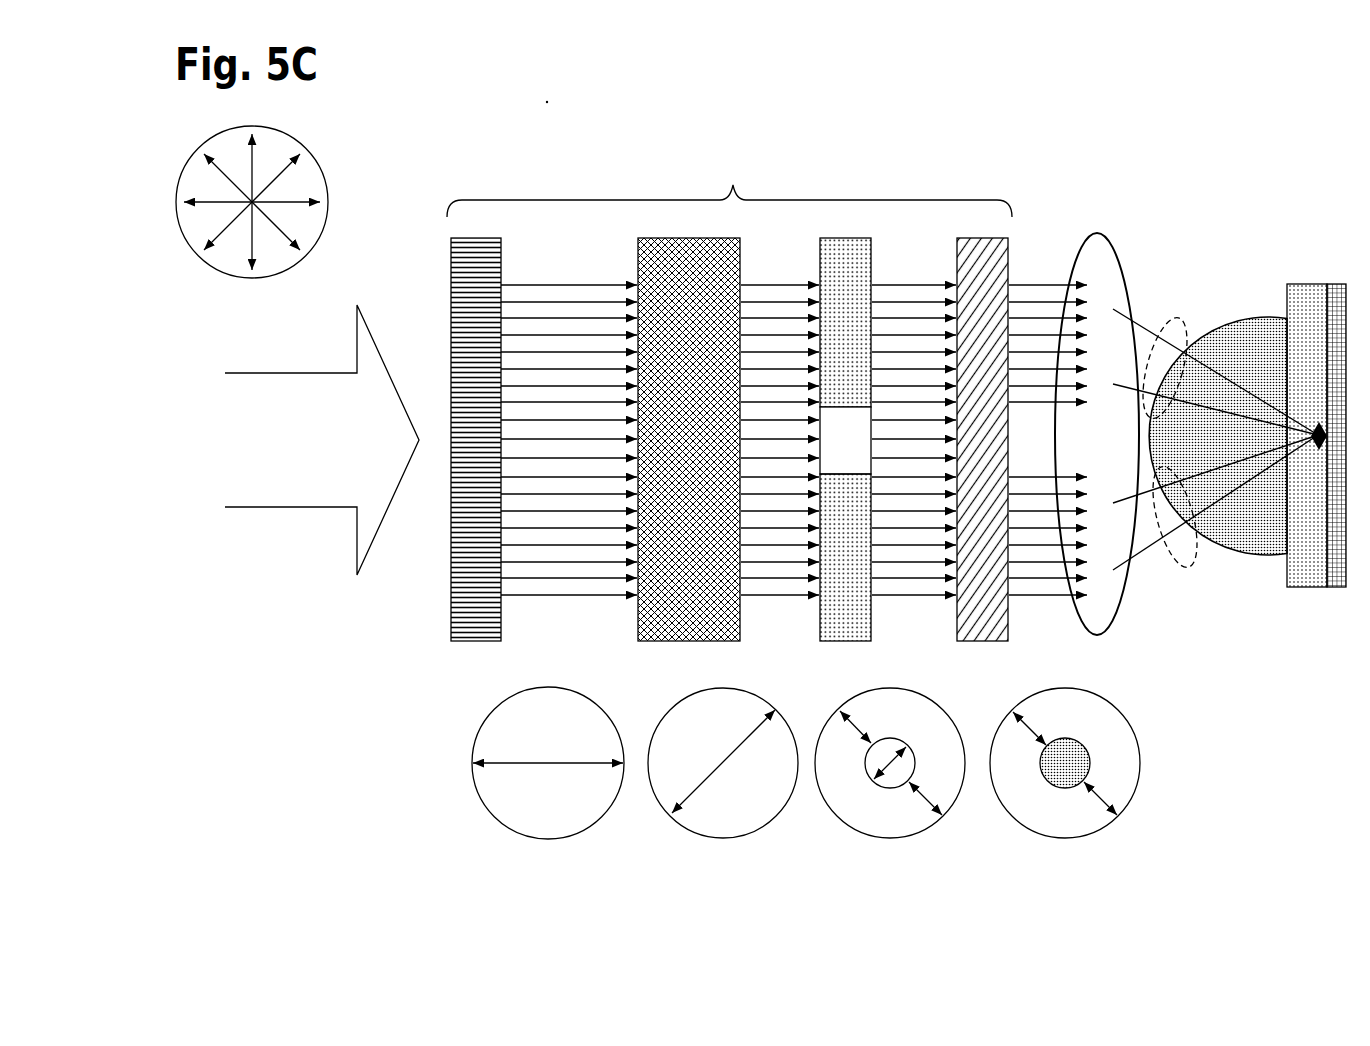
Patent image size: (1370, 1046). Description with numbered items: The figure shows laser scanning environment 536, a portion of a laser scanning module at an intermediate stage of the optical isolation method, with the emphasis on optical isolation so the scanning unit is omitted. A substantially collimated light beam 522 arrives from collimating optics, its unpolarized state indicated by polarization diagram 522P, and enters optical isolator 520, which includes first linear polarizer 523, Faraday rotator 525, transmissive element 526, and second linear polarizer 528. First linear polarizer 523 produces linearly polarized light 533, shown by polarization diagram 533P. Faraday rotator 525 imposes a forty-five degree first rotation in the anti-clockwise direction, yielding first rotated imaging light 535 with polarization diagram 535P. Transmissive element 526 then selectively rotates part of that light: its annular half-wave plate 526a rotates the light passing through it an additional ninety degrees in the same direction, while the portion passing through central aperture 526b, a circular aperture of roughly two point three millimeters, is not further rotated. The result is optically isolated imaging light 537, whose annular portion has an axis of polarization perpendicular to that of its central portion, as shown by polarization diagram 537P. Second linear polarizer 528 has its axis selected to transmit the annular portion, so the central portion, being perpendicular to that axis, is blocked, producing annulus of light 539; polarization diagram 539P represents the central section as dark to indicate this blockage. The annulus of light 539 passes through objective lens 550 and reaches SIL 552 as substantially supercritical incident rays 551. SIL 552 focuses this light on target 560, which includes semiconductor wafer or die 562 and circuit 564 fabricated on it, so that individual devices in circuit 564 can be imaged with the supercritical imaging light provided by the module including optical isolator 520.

The optical isolator 520 is at (729, 183).
The substantially collimated light beam 522 is at (287, 508).
The polarization diagram 522P is at (230, 277).
The first linear polarizer 523 is at (478, 643).
The Faraday rotator 525 is at (645, 643).
The transmissive element 526 is at (837, 470).
The half-wave plate 526a is at (846, 557).
The aperture 526b is at (846, 345).
The second linear polarizer 528 is at (972, 643).
The linearly polarized light 533 is at (555, 605).
The polarization diagram 533P is at (458, 800).
The first rotated imaging light 535 is at (772, 605).
The polarization diagram 535P is at (652, 796).
The laser scanning environment 536 is at (1080, 167).
The optically isolated imaging light 537 is at (905, 605).
The polarization diagram 537P is at (817, 796).
The annulus of light 539 is at (1025, 285).
The polarization diagram 539P is at (1131, 797).
The objective lens 550 is at (1102, 632).
The substantially supercritical incident rays 551 is at (1180, 320).
The SIL 552 is at (1281, 540).
The target 560 is at (1312, 465).
The semiconductor wafer or die 562 is at (1300, 290).
The circuit 564 is at (1336, 590).